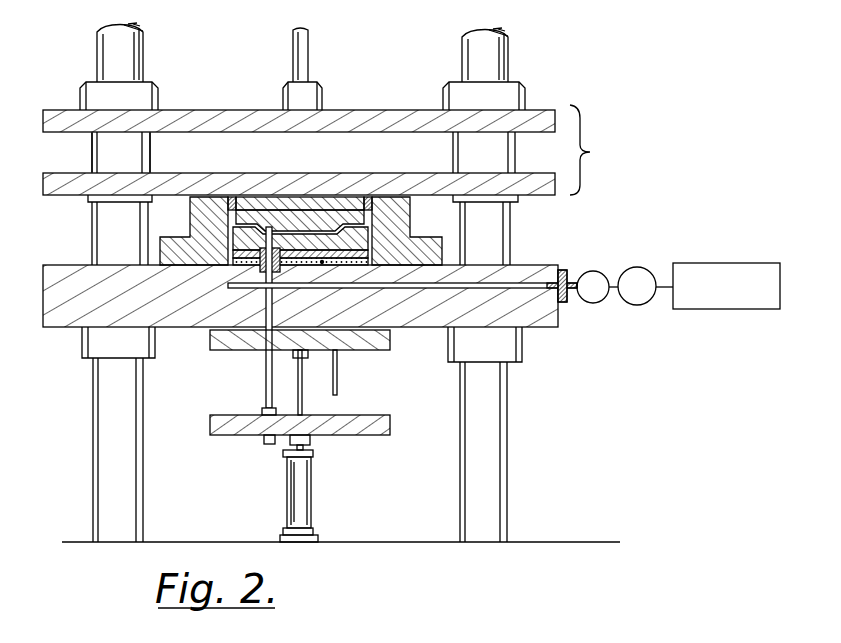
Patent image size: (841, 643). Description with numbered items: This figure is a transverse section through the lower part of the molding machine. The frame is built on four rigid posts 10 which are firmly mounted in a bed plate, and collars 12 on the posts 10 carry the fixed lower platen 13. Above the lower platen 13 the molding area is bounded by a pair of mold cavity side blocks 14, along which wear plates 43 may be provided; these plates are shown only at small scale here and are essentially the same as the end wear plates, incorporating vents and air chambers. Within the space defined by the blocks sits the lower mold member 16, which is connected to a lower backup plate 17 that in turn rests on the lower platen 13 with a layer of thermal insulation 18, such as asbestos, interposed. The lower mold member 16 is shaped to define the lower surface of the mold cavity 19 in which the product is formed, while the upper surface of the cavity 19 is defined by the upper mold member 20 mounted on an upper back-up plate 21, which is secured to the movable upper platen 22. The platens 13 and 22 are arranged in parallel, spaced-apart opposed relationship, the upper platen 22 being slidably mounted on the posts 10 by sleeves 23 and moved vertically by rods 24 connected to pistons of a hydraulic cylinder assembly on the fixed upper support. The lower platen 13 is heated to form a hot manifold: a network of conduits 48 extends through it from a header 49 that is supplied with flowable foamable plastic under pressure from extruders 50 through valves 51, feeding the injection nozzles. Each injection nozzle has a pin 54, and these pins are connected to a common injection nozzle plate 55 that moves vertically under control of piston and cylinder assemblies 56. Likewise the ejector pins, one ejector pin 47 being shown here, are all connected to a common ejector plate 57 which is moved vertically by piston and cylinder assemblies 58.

The posts 10 is at (98, 450).
The collars 12 is at (85, 357).
The lower platen 13 is at (447, 318).
The mold cavity side blocks 14 is at (190, 218).
The lower mold member 16 is at (358, 263).
The lower backup plate 17 is at (340, 253).
The thermal insulation 18 is at (322, 263).
The mold cavity 19 is at (304, 148).
The upper mold member 20 is at (257, 196).
The upper back-up plate 21 is at (330, 214).
The upper platen 22 is at (333, 150).
The sleeves 23 is at (96, 143).
The rods 24 is at (292, 50).
The wear plates 43 is at (233, 197).
The ejector pin 47 is at (263, 296).
The conduits 48 is at (540, 300).
The header 49 is at (594, 271).
The extruders 50 is at (695, 274).
The valves 51 is at (640, 267).
The pin 54 is at (332, 392).
The injection nozzle plate 55 is at (248, 351).
The piston and cylinder assemblies 56 is at (298, 478).
The ejector plate 57 is at (232, 436).
The piston and cylinder assemblies 58 is at (313, 502).